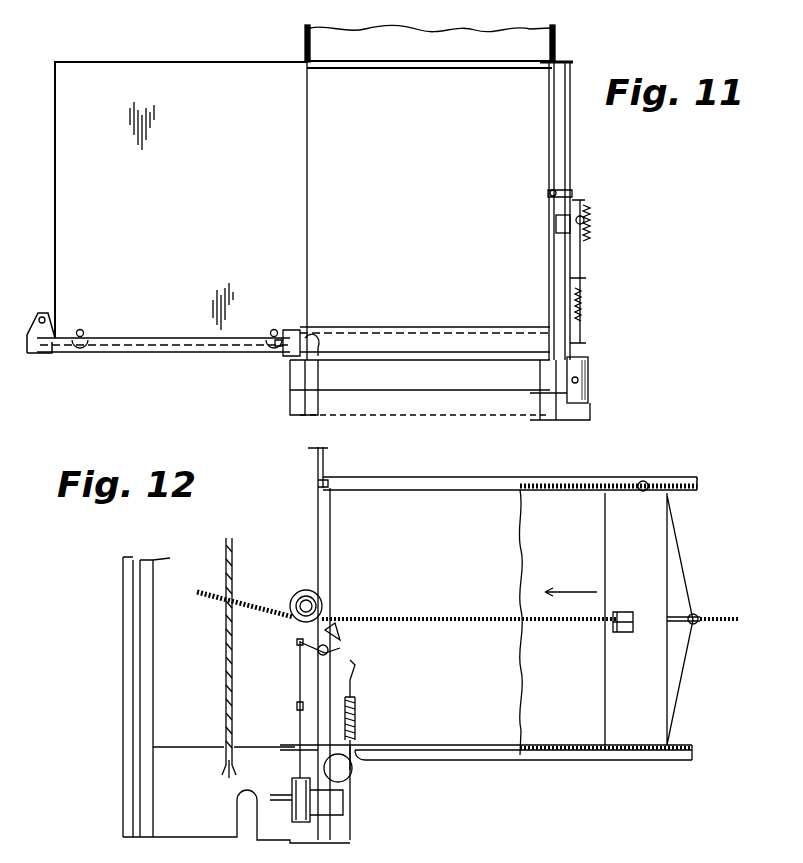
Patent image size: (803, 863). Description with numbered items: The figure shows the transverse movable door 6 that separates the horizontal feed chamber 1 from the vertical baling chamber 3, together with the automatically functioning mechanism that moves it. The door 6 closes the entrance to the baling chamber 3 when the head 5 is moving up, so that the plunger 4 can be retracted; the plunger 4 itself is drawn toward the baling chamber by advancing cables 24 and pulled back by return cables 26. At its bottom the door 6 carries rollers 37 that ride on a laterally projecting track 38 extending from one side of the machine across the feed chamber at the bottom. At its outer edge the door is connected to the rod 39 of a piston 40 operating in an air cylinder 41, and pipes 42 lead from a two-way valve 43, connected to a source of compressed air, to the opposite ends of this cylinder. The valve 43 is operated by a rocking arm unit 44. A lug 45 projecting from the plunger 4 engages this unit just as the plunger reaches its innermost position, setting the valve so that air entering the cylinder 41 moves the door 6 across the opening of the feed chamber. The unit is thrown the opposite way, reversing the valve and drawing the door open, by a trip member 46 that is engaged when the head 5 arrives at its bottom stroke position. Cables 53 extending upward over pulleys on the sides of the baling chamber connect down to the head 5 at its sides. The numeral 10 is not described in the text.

In FIG. 11, the horizontal feed chamber 1 is at (532, 146).
In FIG. 12, the horizontal feed chamber 1 is at (560, 718).
In FIG. 11, the vertical baling chamber 3 is at (540, 45).
In FIG. 12, the vertical baling chamber 3 is at (172, 665).
In FIG. 12, the plunger 4 is at (648, 722).
In FIG. 12, the head 5 is at (170, 763).
In FIG. 11, the transversely movable door 6 is at (290, 275).
In FIG. 12, the transversely movable door 6 is at (322, 565).
In FIG. 12, the track cable 10 is at (548, 487).
In FIG. 11, the advancing cables 24 is at (548, 192).
In FIG. 12, the advancing cables 24 is at (573, 627).
In FIG. 12, the return cables 26 is at (720, 614).
In FIG. 11, the rollers 37 is at (80, 352).
In FIG. 11, the track 38 is at (180, 352).
In FIG. 11, the rod 39 is at (53, 355).
In FIG. 11, the piston 40 is at (320, 333).
In FIG. 11, the air cylinder 41 is at (437, 358).
In FIG. 12, the air cylinder 41 is at (342, 775).
In FIG. 11, the pipes 42 is at (553, 390).
In FIG. 11, the two-way valve 43 is at (590, 373).
In FIG. 12, the two-way valve 43 is at (292, 784).
In FIG. 11, the rocking arm unit 44 is at (590, 216).
In FIG. 12, the rocking arm unit 44 is at (340, 633).
In FIG. 11, the lug 45 is at (583, 205).
In FIG. 12, the lug 45 is at (616, 634).
In FIG. 12, the trip member 46 is at (358, 668).
In FIG. 12, the cables 53 is at (235, 572).